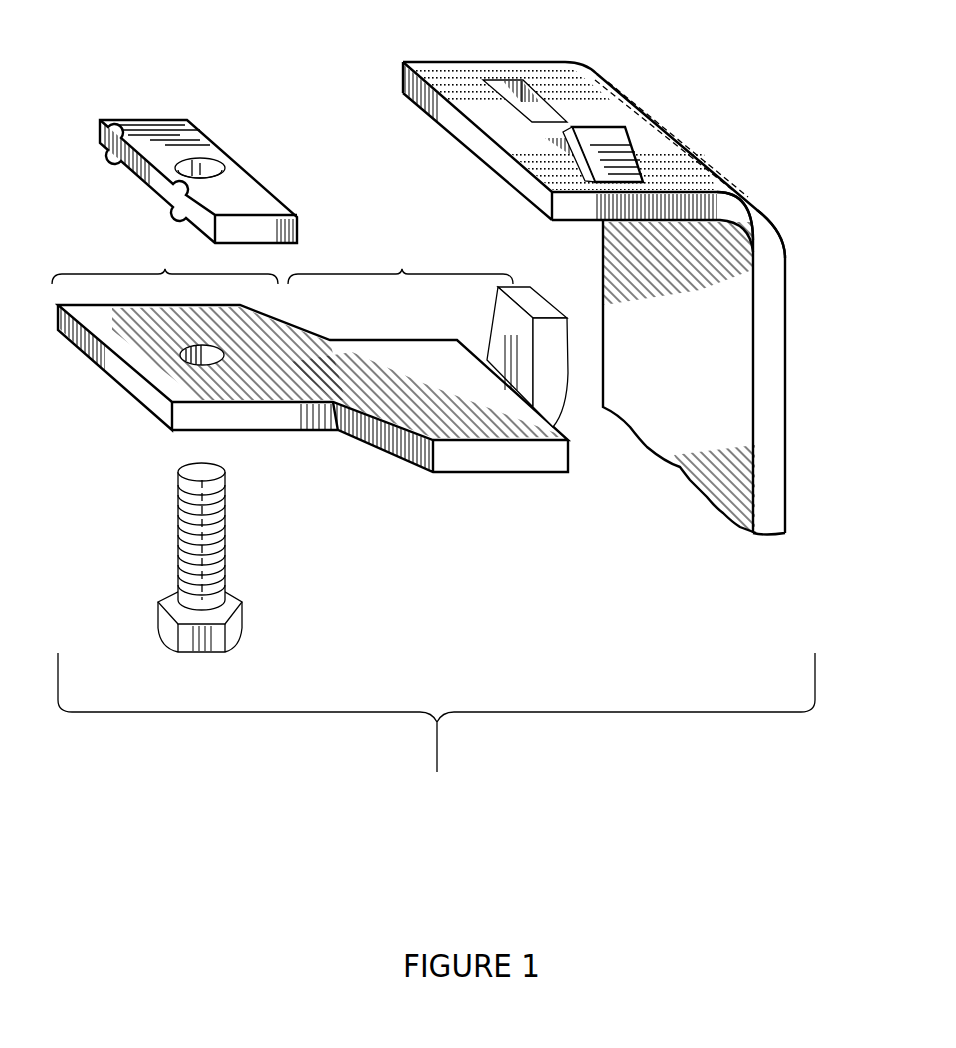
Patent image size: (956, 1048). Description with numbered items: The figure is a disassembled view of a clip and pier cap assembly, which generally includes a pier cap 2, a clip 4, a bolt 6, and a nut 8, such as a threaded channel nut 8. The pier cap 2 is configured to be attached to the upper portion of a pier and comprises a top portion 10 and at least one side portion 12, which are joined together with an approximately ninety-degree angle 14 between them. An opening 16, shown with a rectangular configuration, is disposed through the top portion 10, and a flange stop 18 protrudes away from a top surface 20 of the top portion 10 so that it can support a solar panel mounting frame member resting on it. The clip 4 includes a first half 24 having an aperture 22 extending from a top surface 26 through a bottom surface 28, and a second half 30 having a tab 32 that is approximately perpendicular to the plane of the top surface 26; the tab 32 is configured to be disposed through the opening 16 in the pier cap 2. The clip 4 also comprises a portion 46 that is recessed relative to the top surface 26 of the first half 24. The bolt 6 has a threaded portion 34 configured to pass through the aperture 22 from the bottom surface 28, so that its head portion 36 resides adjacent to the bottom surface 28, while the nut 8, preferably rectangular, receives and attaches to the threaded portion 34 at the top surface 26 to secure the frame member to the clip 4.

The pier cap 2 is at (631, 267).
The clip 4 is at (330, 399).
The bolt 6 is at (246, 557).
The nut 8 is at (237, 112).
The top portion 10 is at (594, 129).
The side portion 12 is at (777, 342).
The ninety-degree angle 14 is at (728, 237).
The opening 16 is at (550, 117).
The flange stop 18 is at (620, 157).
The top surface 20 is at (447, 77).
The aperture 22 is at (330, 380).
The first half 24 is at (165, 265).
The top surface 26 is at (103, 320).
The bottom surface 28 is at (139, 430).
The second half 30 is at (400, 265).
The tab 32 is at (553, 362).
The threaded portion 34 is at (225, 525).
The head portion 36 is at (237, 628).
The recessed portion 46 is at (448, 385).